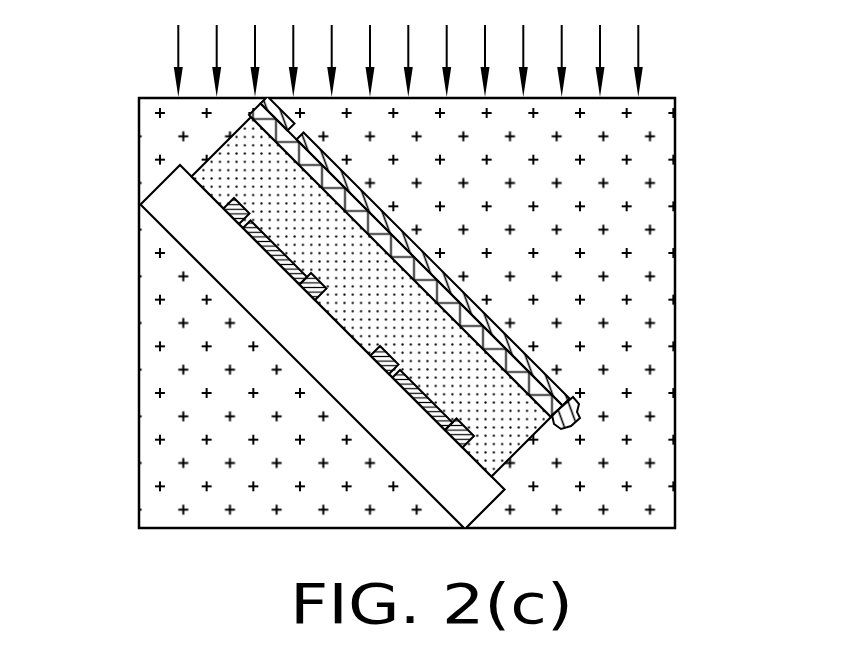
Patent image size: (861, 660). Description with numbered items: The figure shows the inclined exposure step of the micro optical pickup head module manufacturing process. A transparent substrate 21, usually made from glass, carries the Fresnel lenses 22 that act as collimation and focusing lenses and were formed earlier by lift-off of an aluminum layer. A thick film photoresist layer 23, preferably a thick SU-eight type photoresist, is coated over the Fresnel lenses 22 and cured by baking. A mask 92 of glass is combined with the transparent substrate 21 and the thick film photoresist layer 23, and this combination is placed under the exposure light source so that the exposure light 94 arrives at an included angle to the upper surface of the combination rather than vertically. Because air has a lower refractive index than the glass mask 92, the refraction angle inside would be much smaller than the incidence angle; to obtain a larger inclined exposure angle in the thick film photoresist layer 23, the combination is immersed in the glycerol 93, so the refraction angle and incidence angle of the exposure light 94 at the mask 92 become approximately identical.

The transparent substrate 21 is at (190, 228).
The Fresnel lenses 22 is at (268, 254).
The thick film photoresist layer 23 is at (237, 170).
The mask 92 is at (582, 423).
The glycerol 93 is at (636, 250).
The exposure light 94 is at (646, 46).